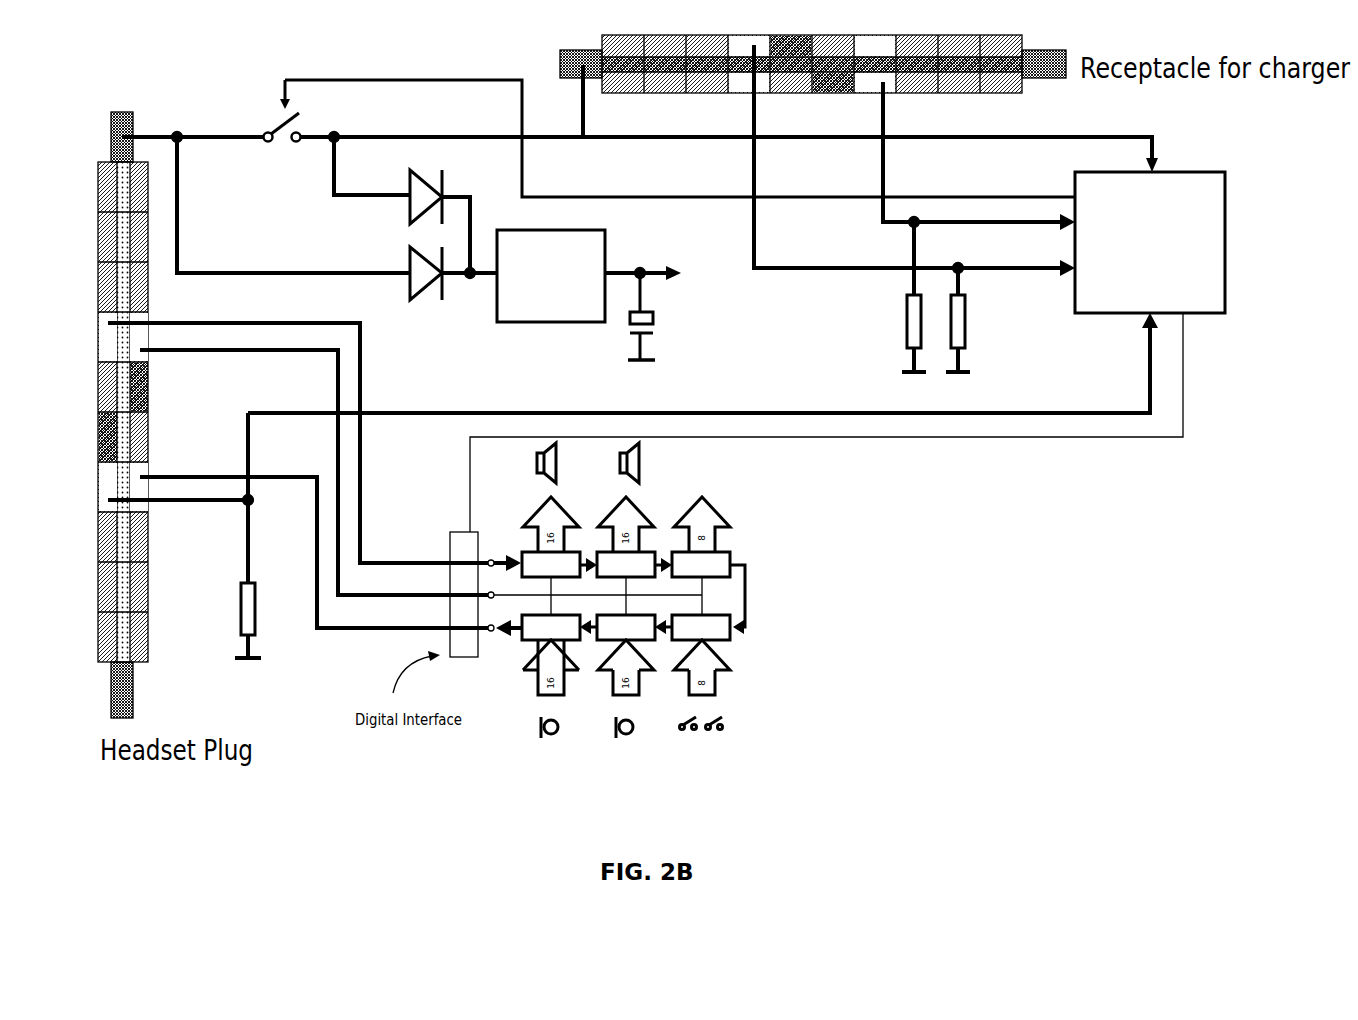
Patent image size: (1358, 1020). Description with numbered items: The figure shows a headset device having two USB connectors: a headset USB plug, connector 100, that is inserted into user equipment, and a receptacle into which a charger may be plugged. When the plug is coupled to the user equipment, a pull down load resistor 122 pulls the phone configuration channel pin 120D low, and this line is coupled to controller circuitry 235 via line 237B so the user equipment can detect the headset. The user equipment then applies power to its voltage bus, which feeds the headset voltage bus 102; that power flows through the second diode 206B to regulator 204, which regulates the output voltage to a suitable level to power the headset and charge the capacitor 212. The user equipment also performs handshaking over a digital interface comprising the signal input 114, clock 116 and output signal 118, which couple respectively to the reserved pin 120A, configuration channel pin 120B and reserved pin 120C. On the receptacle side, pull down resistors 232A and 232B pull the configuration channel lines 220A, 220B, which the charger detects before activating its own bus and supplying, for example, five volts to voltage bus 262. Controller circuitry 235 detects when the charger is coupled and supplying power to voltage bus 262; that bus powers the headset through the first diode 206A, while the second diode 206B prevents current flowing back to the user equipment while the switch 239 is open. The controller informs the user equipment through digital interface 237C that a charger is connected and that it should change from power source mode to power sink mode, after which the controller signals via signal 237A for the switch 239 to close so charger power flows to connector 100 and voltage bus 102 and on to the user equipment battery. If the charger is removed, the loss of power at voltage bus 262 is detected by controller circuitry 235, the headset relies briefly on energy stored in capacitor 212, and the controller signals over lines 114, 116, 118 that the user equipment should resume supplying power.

The USB connector 100 is at (98, 162).
The voltage bus 102 is at (133, 130).
The pin 120A is at (108, 347).
The configuration channel pin 120B is at (145, 330).
The pin 120C is at (148, 468).
The configuration channel pin 120D is at (108, 485).
The load resistor 122 is at (256, 602).
The regulator 204 is at (612, 276).
The diode 206A is at (422, 182).
The diode 206B is at (408, 295).
The capacitor 212 is at (628, 323).
The configuration channel line 220A is at (745, 40).
The configuration channel line 220B is at (877, 88).
The pull down resistor 232A is at (905, 335).
The pull down resistor 232B is at (968, 342).
The controller circuitry 235 is at (1150, 242).
The signal 237A is at (680, 138).
The line 237B is at (703, 363).
The digital interface 237C is at (450, 530).
The switch 239 is at (267, 142).
The voltage bus 262 is at (563, 70).
The signal input 114 is at (463, 554).
The clock 116 is at (553, 593).
The output signal 118 is at (463, 619).